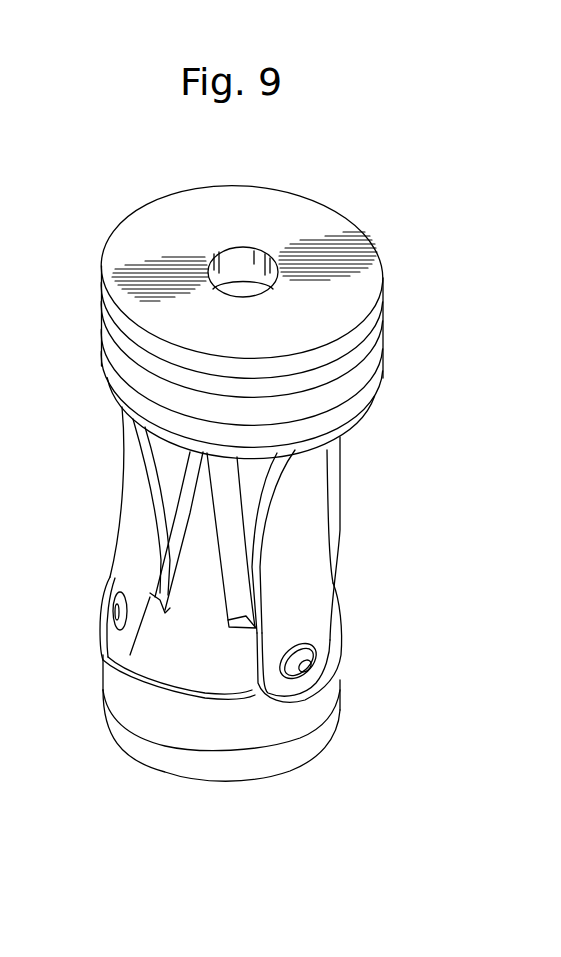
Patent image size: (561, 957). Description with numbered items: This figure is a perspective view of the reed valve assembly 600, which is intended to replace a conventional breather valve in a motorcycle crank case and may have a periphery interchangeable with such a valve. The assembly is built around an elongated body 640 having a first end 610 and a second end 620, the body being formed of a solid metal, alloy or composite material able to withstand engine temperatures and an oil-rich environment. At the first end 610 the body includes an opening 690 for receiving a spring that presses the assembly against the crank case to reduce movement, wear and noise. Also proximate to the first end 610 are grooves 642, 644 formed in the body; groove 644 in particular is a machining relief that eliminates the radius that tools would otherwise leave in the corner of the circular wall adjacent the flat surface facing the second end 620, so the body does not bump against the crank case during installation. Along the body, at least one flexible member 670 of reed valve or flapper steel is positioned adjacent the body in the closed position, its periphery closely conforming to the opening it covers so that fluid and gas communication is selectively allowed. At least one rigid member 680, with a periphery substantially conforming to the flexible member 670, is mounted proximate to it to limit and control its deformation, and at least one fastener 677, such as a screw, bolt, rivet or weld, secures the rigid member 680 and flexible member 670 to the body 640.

The reed valve assembly 600 is at (254, 497).
The first end 610 is at (176, 212).
The second end 620 is at (200, 781).
The elongated body 640 is at (345, 648).
The groove 642 is at (355, 370).
The groove 644 is at (365, 410).
The flexible member 670 is at (167, 475).
The fastener 677 is at (118, 603).
The rigid member 680 is at (132, 537).
The opening 690 is at (242, 288).